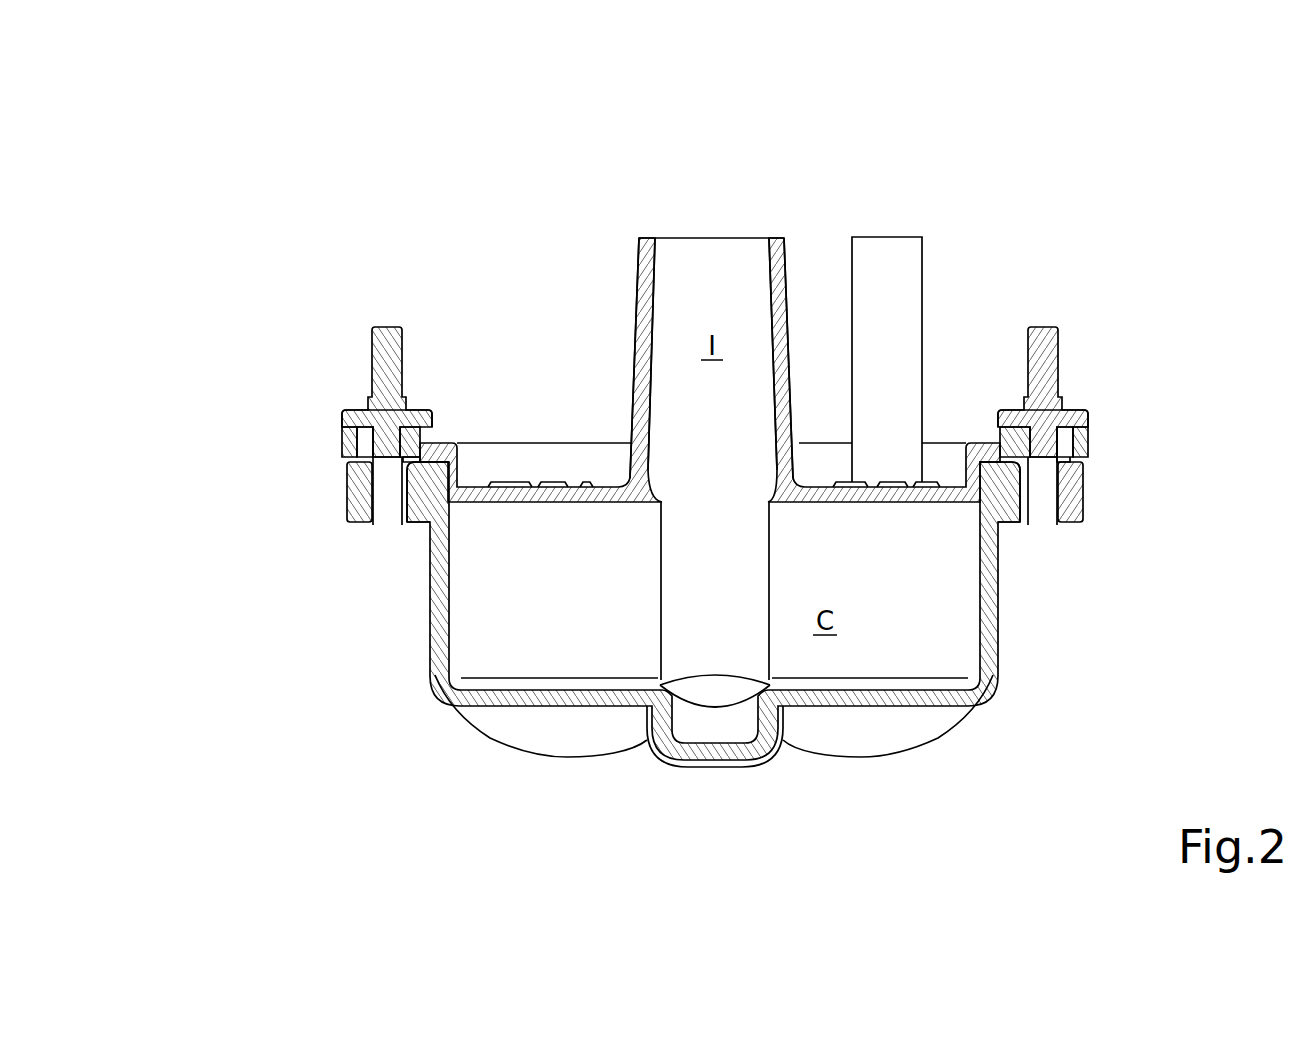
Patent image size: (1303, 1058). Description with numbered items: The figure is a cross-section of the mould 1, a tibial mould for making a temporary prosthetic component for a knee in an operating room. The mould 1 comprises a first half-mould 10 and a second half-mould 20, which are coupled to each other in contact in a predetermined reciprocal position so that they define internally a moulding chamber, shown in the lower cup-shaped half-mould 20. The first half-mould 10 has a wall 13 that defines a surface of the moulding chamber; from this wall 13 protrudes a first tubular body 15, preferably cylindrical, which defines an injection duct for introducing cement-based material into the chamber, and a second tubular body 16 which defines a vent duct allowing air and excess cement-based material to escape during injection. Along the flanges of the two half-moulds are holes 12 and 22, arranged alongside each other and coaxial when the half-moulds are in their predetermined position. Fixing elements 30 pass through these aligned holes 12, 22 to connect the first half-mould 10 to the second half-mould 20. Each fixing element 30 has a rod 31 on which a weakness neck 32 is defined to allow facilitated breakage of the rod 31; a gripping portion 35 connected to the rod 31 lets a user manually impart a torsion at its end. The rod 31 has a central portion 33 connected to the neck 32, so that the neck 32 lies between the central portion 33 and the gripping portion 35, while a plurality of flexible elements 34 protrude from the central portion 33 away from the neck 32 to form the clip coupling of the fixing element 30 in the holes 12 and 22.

The mould 1 is at (699, 463).
The first half-mould 10 is at (736, 382).
The holes 12 is at (412, 427).
The wall 13 is at (542, 500).
The first tubular body 15 is at (633, 287).
The second tubular body 16 is at (927, 265).
The second half-mould 20 is at (664, 660).
The holes 22 is at (365, 530).
The fixing element 30 is at (726, 389).
The rod 31 is at (360, 460).
The weakness neck 32 is at (368, 432).
The central portion 33 is at (387, 448).
The flexible elements 34 is at (387, 510).
The gripping portion 35 is at (377, 361).